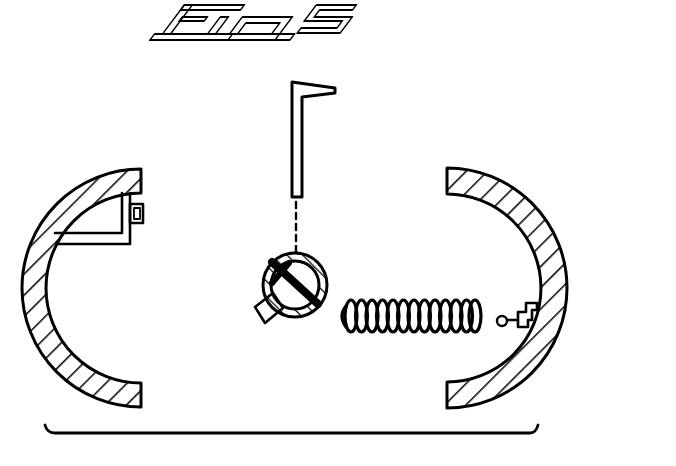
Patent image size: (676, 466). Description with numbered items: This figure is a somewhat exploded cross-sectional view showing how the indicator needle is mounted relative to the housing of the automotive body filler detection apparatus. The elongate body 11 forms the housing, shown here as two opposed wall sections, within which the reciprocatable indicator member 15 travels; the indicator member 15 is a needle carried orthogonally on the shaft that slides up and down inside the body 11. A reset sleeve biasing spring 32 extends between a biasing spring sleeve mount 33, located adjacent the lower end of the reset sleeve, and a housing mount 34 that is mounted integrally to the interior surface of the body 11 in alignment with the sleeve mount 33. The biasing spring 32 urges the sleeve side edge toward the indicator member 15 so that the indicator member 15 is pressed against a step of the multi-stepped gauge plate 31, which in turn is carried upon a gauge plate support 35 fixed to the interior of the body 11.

The body 11 is at (121, 170).
The indicator member 15 is at (300, 150).
The multi-stepped gauge plate 31 is at (143, 211).
The reset sleeve biasing spring 32 is at (397, 298).
The biasing spring sleeve mount 33 is at (258, 326).
The housing mount 34 is at (566, 270).
The gauge plate support 35 is at (101, 238).